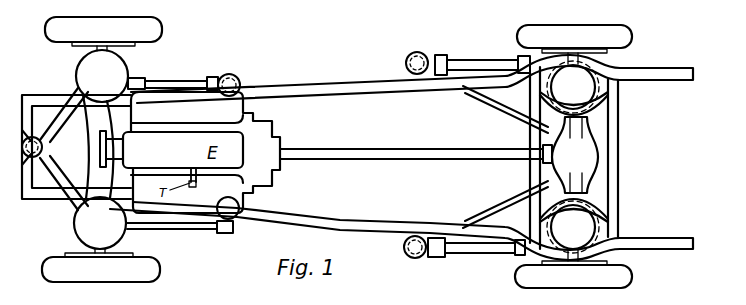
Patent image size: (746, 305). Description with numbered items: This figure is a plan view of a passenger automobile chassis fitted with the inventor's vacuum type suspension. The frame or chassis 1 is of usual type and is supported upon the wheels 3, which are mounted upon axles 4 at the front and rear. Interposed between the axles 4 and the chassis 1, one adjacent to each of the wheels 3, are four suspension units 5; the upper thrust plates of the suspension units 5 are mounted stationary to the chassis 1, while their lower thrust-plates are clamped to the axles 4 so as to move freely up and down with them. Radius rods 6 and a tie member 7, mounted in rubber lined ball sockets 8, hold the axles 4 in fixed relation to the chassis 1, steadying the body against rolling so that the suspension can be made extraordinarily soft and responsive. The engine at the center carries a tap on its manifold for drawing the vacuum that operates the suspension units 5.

The frame or chassis 1 is at (325, 87).
The wheels 3 is at (162, 37).
The axles 4 is at (88, 125).
The suspension units 5 is at (92, 64).
The radius rods 6 is at (185, 79).
The tie member 7 is at (44, 140).
The rubber lined ball sockets 8 is at (23, 151).